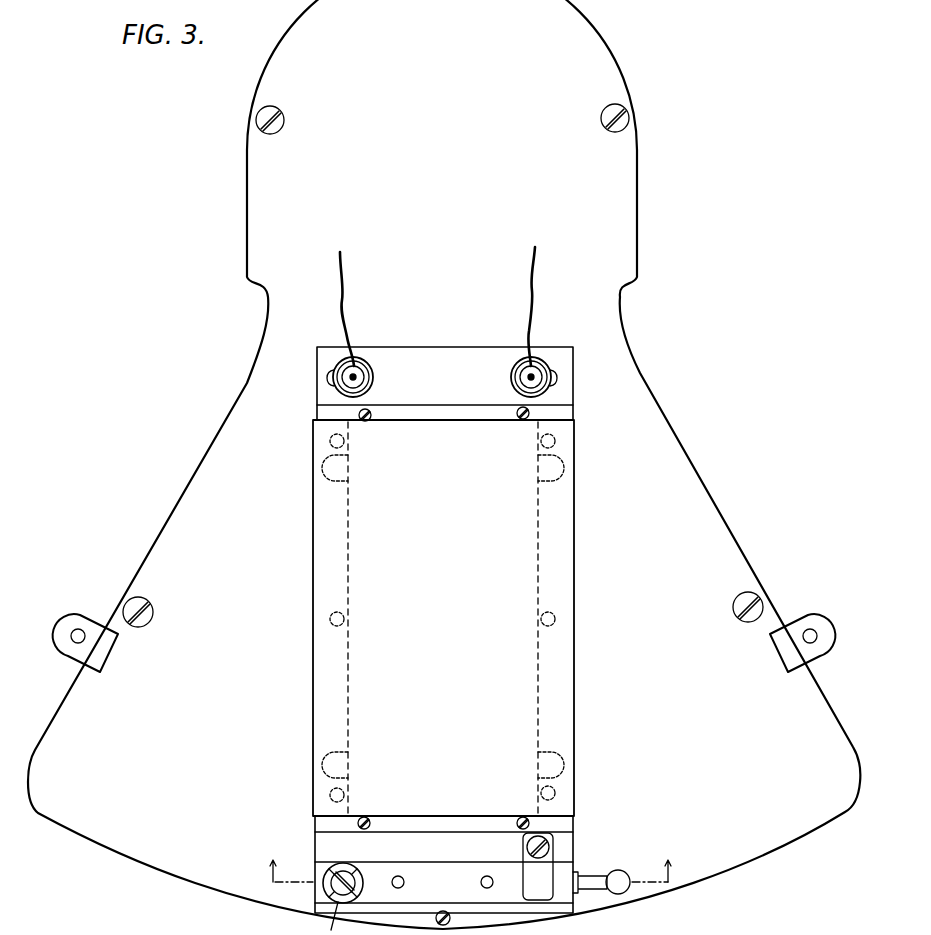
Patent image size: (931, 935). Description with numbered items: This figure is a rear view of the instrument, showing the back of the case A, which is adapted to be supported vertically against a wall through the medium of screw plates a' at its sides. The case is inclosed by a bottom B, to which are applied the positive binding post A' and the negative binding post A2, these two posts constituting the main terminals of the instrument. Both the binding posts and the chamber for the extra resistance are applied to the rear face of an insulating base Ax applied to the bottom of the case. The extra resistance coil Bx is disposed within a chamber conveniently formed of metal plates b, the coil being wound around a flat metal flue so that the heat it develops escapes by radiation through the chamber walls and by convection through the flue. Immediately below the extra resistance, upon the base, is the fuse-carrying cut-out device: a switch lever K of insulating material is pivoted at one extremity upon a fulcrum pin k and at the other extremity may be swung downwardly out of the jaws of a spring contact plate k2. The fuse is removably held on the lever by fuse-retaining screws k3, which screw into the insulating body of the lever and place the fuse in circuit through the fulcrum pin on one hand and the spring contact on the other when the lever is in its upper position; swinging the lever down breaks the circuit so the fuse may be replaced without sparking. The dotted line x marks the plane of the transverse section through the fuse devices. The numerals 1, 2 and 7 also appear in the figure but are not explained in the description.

The case A is at (444, 464).
The screw plates a' is at (444, 627).
The bottom B is at (443, 365).
The insulating base Ax is at (445, 384).
The negative binding post A2 is at (373, 371).
The positive binding post A' is at (521, 377).
The conductor wire 1 is at (541, 362).
The conductor wire 2 is at (342, 362).
The extra resistance coil Bx is at (443, 618).
The metal plates b is at (445, 639).
The switch lever K is at (472, 870).
The fulcrum pin k is at (327, 876).
The spring contact plate k2 is at (538, 866).
The fuse-retaining screws k3 is at (399, 876).
The screw 7 is at (551, 848).
The section line x is at (468, 876).